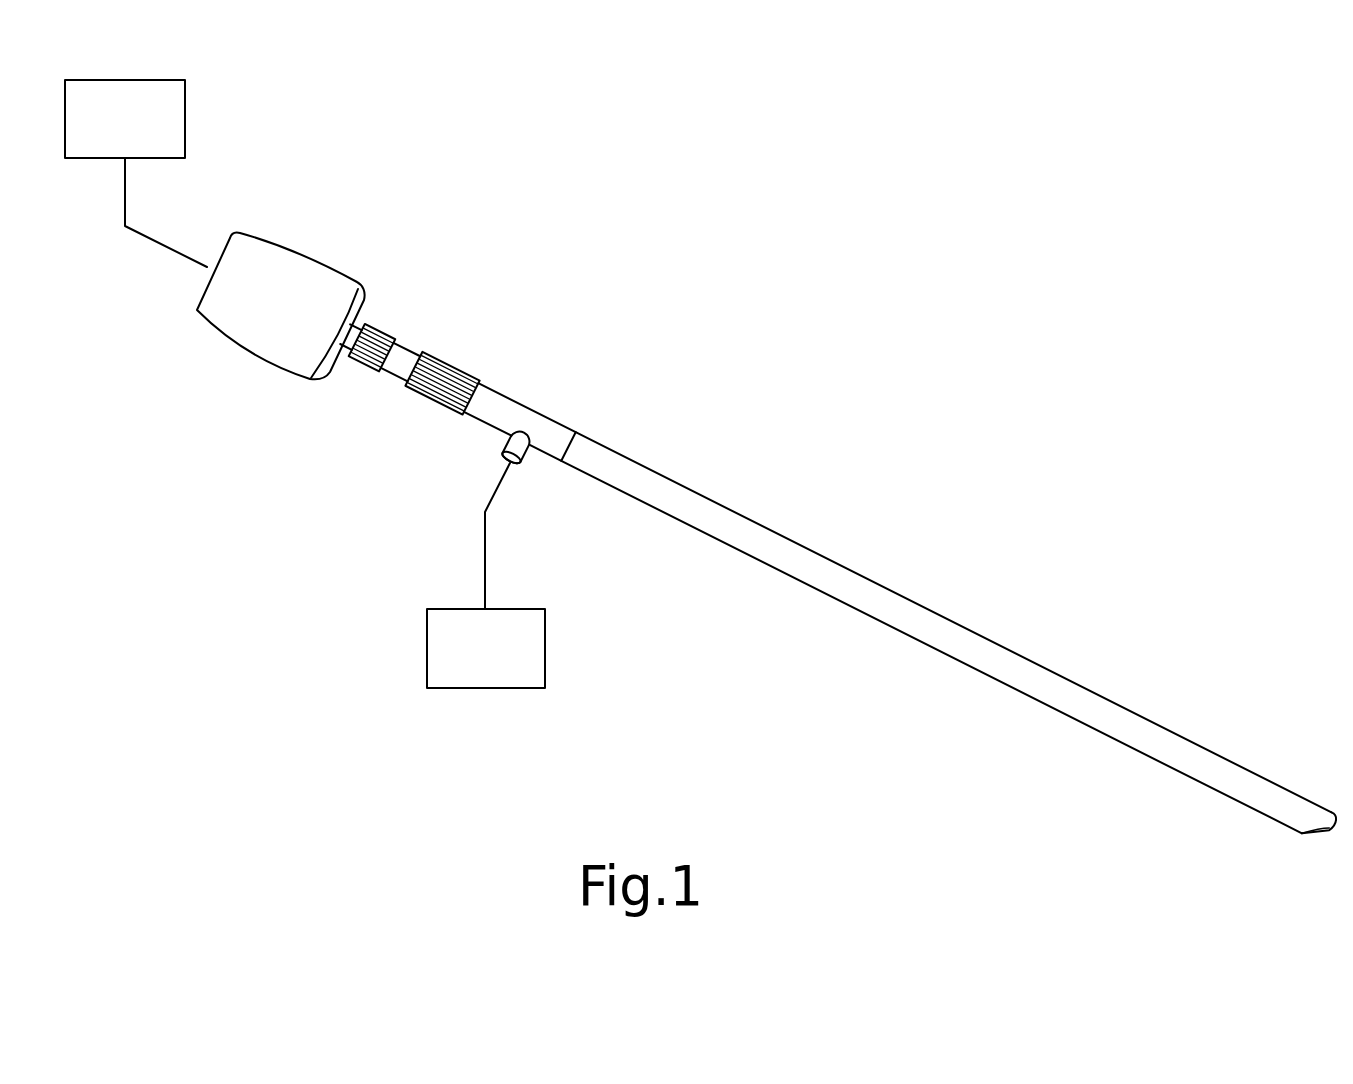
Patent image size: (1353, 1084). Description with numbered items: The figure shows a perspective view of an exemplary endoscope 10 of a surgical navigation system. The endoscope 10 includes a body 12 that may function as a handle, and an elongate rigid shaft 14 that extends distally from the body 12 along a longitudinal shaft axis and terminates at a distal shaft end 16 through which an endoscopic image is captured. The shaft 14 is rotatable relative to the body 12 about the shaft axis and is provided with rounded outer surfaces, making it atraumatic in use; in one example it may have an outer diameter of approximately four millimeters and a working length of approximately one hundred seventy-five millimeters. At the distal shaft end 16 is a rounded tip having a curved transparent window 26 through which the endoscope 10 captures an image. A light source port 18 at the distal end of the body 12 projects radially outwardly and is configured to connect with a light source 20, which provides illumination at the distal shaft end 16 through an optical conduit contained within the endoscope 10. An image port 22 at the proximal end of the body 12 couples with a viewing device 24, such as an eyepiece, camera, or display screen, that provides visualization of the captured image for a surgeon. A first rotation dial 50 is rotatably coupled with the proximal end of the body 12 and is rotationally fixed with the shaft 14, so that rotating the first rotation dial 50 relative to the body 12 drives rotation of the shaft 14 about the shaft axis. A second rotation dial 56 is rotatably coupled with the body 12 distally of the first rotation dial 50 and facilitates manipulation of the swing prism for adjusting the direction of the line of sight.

The endoscope 10 is at (741, 348).
The body 12 is at (518, 404).
The elongate rigid shaft 14 is at (863, 577).
The distal shaft end 16 is at (1310, 798).
The light source port 18 is at (522, 458).
The light source 20 is at (507, 658).
The image port 22 is at (308, 247).
The viewing device 24 is at (139, 131).
The curved transparent window 26 is at (1318, 835).
The first rotation dial 50 is at (380, 329).
The second rotation dial 56 is at (465, 372).